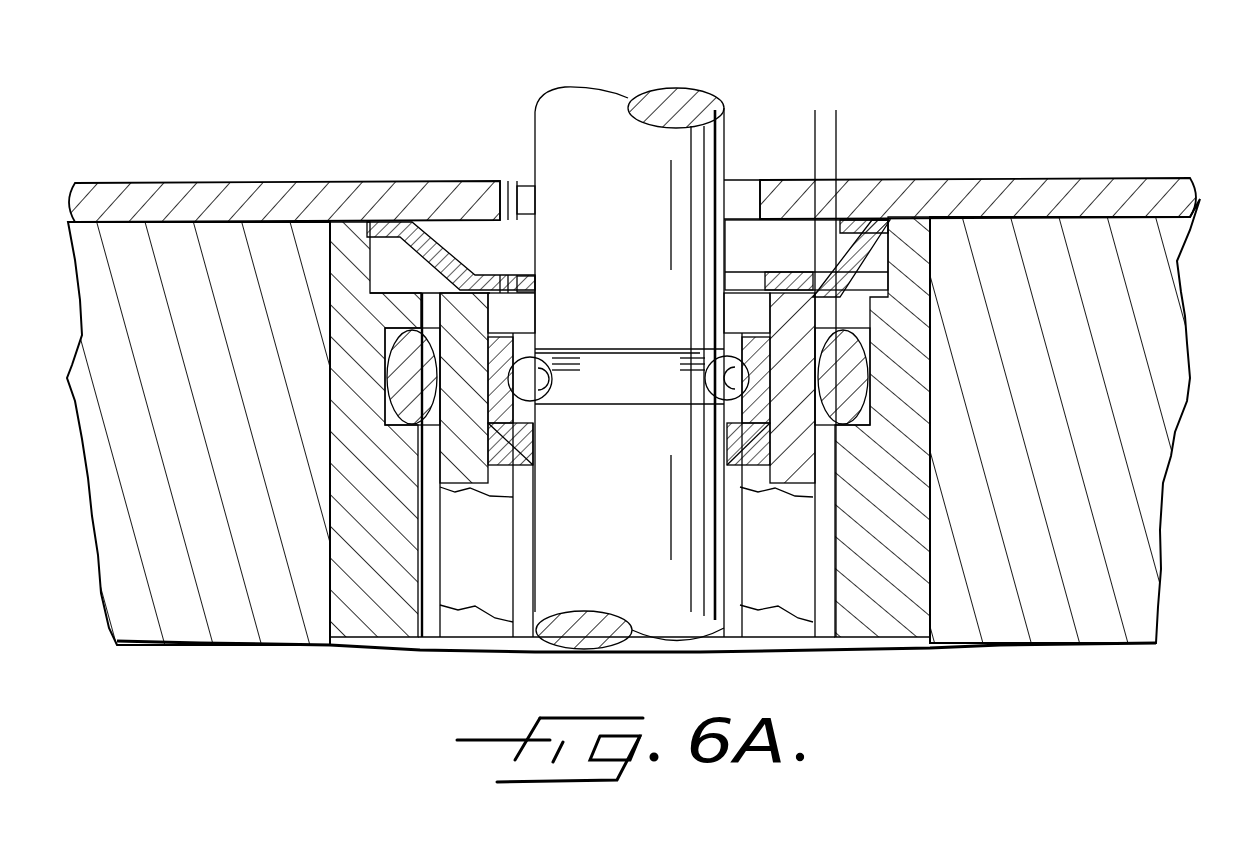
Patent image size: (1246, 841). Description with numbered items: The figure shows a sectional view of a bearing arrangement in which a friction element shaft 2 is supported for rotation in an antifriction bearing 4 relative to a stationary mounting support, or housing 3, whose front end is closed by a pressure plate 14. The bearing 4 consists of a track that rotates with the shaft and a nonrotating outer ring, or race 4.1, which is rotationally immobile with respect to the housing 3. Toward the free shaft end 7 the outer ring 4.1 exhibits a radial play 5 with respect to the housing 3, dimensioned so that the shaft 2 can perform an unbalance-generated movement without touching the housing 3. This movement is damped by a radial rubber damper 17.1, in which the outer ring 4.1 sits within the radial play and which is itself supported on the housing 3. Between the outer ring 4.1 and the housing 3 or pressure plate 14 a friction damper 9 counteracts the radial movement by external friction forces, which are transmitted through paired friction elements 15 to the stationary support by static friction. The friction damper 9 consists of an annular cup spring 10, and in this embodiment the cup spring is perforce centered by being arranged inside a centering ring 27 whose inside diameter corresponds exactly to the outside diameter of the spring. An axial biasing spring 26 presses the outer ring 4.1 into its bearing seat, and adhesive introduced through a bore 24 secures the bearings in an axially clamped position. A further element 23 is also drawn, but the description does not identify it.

The friction element shaft 2 is at (708, 146).
The stationary mounting support (housing) 3 is at (1128, 503).
The antifriction bearing 4 is at (722, 352).
The outer ring (race) 4.1 is at (541, 348).
The radial play 5 is at (762, 146).
The free shaft end 7 is at (672, 44).
The friction damper 9 is at (392, 266).
The annular cup spring 10 is at (464, 186).
The pressure plate 14 is at (1000, 190).
The paired friction elements 15 is at (388, 240).
The radial rubber damper 17.1 is at (765, 424).
The race groove 23 is at (705, 382).
The bore 24 is at (800, 310).
The axial biasing spring 26 is at (533, 430).
The centering ring 27 is at (375, 235).